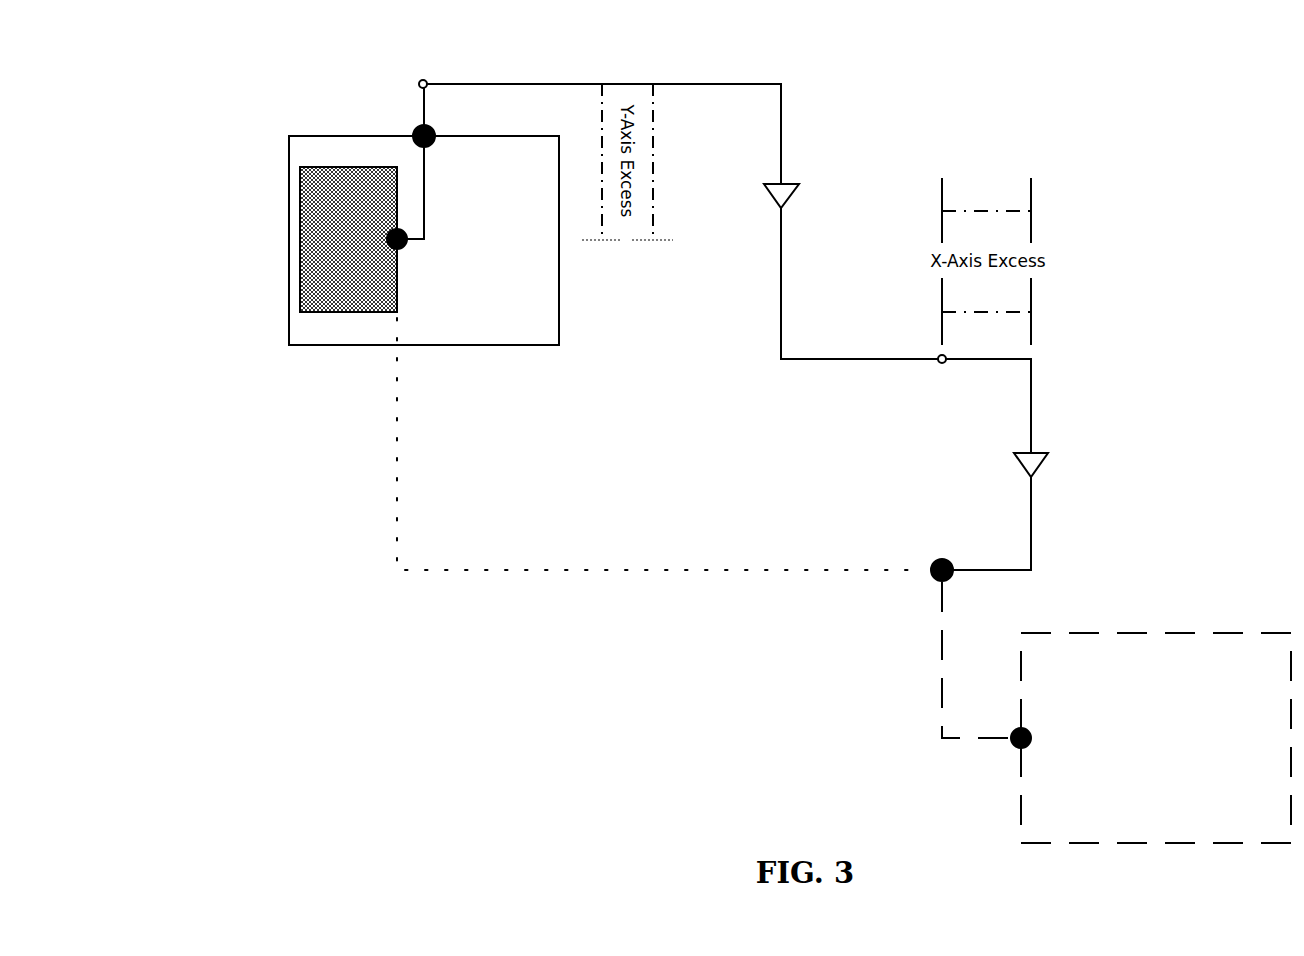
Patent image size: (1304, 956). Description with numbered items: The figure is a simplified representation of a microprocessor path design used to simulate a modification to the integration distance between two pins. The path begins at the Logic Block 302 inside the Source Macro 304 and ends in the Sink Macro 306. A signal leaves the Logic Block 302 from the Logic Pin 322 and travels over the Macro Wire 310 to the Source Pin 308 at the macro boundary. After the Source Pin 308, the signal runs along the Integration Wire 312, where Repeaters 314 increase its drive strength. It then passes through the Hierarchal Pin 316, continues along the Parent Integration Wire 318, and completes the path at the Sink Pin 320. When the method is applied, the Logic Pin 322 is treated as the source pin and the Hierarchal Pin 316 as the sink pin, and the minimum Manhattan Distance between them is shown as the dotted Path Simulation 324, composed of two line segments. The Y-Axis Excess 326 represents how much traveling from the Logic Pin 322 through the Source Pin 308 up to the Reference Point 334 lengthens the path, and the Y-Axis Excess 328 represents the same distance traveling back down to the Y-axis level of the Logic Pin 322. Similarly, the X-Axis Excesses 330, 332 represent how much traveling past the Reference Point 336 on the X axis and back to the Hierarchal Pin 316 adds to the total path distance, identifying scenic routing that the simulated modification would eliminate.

The Logic Block 302 is at (348, 239).
The Source Macro 304 is at (288, 240).
The Sink Macro 306 is at (1156, 738).
The Source Pin 308 is at (411, 133).
The Macro Wire 310 is at (431, 168).
The Integration Wire 312 is at (686, 82).
The Repeaters 314 is at (803, 180).
The Hierarchal Pin 316 is at (930, 560).
The Parent Integration Wire 318 is at (936, 658).
The Sink Pin 320 is at (1012, 745).
The Logic Pin 322 is at (405, 250).
The Path Simulation 324 is at (410, 462).
The Y-Axis Excess 326 is at (602, 290).
The Y-Axis Excess 328 is at (653, 290).
The X-Axis Excess 330 is at (1037, 312).
The X-Axis Excess 332 is at (1037, 211).
The Reference Point 334 is at (426, 74).
The Reference Point 336 is at (942, 367).